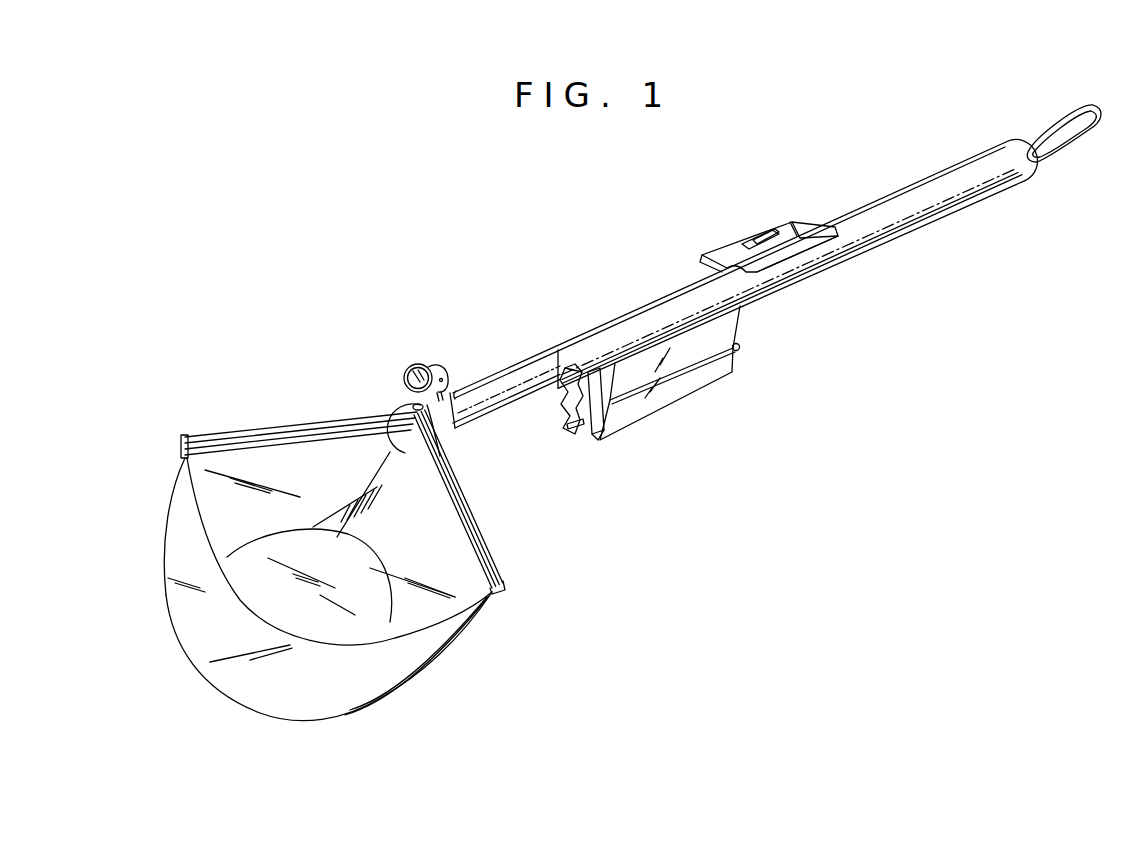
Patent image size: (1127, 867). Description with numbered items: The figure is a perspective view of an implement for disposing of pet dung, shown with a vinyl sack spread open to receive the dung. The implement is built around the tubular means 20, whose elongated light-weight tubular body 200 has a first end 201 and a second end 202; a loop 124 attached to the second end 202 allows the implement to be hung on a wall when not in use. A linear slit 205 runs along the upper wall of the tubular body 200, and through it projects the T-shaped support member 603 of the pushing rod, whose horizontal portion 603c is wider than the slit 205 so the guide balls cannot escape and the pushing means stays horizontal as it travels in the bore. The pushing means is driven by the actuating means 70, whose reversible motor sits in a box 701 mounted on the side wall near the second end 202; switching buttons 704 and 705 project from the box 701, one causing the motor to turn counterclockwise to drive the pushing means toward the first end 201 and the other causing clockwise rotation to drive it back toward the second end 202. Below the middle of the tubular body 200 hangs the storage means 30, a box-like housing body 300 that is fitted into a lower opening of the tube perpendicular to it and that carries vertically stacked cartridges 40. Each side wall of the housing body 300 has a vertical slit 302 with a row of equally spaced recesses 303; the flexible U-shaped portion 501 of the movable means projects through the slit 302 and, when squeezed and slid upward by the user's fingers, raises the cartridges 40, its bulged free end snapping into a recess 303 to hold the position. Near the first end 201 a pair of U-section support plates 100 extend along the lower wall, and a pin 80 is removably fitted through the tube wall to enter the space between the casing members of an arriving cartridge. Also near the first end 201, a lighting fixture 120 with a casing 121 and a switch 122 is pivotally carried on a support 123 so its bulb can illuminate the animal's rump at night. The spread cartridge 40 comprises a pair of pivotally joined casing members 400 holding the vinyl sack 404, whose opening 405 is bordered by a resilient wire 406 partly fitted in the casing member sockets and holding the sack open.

The tubular means 20 is at (904, 190).
The tubular body 200 is at (893, 212).
The first end 201 is at (456, 431).
The second end 202 is at (1003, 142).
The loop 124 is at (1083, 108).
The linear slit 205 is at (622, 317).
The support plates 100 is at (497, 413).
The actuating means 70 is at (770, 228).
The support member 603 is at (820, 231).
The horizontal portion 603c is at (805, 247).
The box 701 is at (793, 222).
The switching button 704 is at (746, 245).
The switching button 705 is at (767, 237).
The housing body 300 is at (712, 378).
The storage means 30 is at (678, 401).
The slits 302 is at (608, 412).
The recesses 303 is at (598, 432).
The U-shaped portion 501 is at (742, 347).
The lighting fixture 120 is at (426, 357).
The casing 121 is at (408, 366).
The switch 122 is at (442, 370).
The support 123 is at (456, 390).
The pin 80 is at (424, 405).
The cartridge 40 is at (185, 432).
The casing members 400 is at (292, 428).
The opening 405 is at (255, 462).
The vinyl sack 404 is at (338, 722).
The resilient wire 406 is at (433, 623).